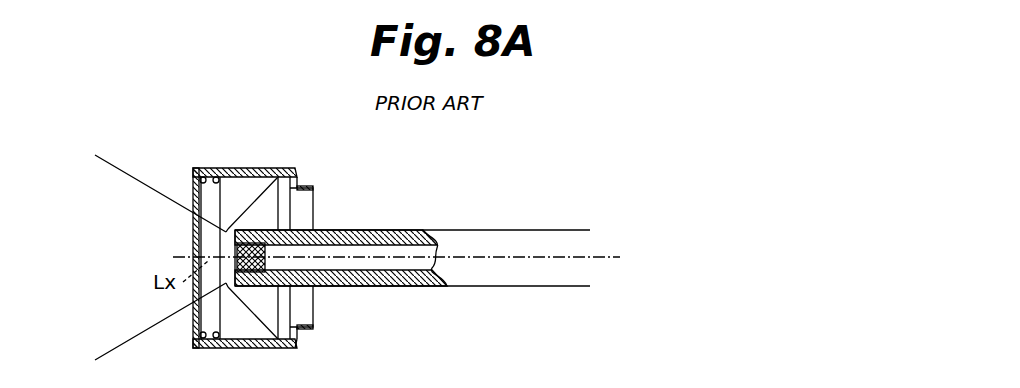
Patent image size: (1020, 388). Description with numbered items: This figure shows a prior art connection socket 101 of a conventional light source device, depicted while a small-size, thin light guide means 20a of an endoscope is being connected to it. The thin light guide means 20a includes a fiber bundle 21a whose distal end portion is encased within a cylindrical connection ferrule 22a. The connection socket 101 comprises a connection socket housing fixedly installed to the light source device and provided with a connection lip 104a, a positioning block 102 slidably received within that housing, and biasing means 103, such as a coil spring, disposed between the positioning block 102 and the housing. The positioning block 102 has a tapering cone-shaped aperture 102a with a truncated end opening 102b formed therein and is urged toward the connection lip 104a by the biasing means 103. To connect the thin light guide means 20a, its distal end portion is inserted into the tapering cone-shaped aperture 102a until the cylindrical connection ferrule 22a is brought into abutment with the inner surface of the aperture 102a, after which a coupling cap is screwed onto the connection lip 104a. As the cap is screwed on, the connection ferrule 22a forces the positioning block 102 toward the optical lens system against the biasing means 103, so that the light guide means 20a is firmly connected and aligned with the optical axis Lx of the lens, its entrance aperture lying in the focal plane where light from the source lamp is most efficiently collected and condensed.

The connection socket 101 is at (330, 186).
The positioning block 102 is at (257, 192).
The tapering cone-shaped aperture 102a is at (262, 308).
The truncated end opening 102b is at (230, 244).
The biasing means 103 is at (215, 177).
The connection lip 104a is at (300, 330).
The thin light guide means 20a is at (536, 218).
The fiber bundle 21a is at (368, 250).
The cylindrical connection ferrule 22a is at (462, 229).